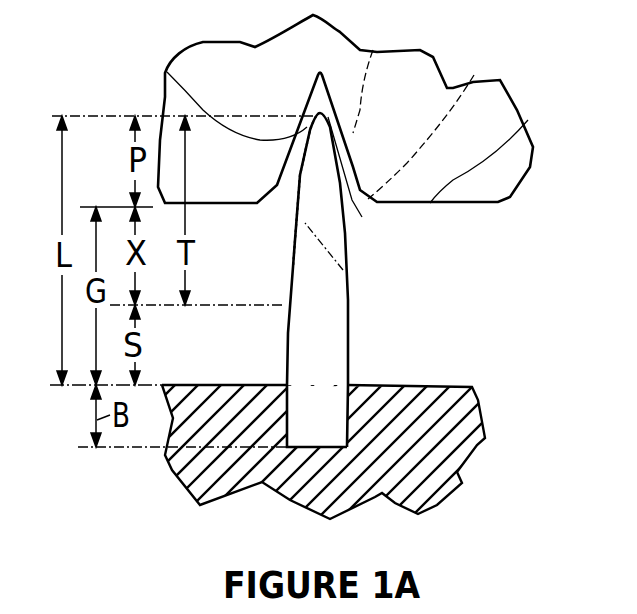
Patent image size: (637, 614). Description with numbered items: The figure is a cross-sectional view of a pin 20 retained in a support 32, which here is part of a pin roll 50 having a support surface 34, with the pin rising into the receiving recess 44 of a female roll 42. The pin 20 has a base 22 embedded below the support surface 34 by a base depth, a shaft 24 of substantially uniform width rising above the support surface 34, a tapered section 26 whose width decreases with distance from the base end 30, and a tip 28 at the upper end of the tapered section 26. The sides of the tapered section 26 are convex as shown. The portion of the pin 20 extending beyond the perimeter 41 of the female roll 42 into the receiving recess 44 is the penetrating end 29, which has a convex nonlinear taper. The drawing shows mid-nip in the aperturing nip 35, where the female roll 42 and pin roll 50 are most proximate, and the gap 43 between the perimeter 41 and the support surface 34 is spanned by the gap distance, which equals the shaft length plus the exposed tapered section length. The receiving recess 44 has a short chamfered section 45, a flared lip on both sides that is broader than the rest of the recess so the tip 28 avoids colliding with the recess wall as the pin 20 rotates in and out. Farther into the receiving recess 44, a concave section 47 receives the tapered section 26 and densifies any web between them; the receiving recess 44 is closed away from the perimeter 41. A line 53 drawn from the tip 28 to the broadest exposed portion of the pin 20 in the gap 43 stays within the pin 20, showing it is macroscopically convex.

The pin 20 is at (340, 333).
The base 22 is at (300, 443).
The shaft 24 is at (288, 332).
The tapered section 26 is at (292, 258).
The tip 28 is at (364, 187).
The penetrating end 29 is at (300, 178).
The base end 30 is at (372, 423).
The support 32 is at (412, 417).
The pin roll 50 is at (318, 300).
The support surface 34 is at (450, 387).
The aperturing nip 35 is at (452, 231).
The perimeter 41 is at (528, 120).
The female roll 42 is at (423, 120).
The gap 43 is at (452, 281).
The receiving recess 44 is at (167, 72).
The chamfered section 45 is at (474, 75).
The concave section 47 is at (373, 50).
The line 53 is at (347, 273).